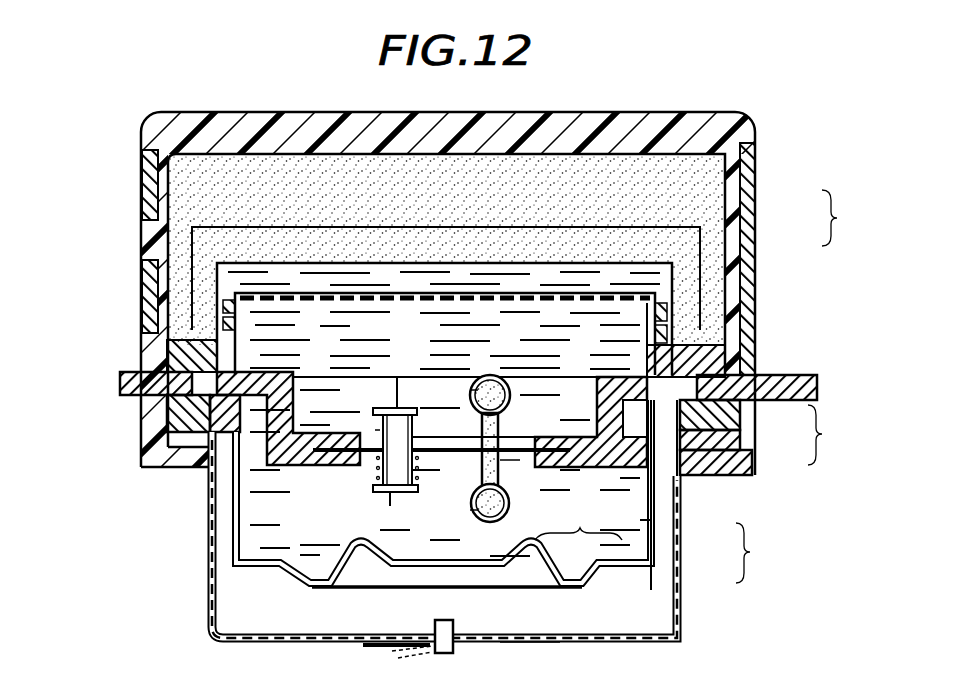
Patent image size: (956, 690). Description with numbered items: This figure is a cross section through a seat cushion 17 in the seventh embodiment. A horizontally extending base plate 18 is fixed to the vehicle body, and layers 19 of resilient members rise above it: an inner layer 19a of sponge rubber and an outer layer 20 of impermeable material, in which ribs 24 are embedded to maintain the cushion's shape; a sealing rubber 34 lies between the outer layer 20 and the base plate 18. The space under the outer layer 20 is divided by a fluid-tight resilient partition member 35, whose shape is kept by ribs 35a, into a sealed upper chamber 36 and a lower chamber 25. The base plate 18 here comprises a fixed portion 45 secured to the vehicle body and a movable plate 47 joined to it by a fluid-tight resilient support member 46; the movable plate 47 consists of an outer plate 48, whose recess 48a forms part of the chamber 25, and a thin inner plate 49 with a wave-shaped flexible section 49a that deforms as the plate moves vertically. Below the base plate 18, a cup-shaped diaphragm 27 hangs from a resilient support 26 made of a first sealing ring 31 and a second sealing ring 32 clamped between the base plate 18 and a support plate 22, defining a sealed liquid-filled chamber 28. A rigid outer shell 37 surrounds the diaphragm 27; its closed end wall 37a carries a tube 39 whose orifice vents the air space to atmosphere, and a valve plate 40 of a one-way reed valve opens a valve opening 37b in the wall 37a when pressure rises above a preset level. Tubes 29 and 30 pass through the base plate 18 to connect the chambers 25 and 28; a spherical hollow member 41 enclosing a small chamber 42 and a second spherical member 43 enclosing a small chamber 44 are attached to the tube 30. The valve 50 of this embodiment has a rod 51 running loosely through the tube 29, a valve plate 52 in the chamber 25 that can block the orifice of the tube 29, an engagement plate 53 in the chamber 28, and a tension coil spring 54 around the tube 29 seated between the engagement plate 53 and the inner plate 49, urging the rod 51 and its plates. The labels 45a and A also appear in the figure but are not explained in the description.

The seat cushion 17 is at (154, 106).
The ribs 24 is at (748, 180).
The sponge rubber layer 19a is at (716, 207).
The resilient layers 19 is at (844, 218).
The outer layer 20 is at (745, 238).
The upper chamber 36 is at (700, 271).
The chamber 25 is at (660, 318).
The ribs 35a is at (243, 313).
The partition member 35 is at (388, 297).
The sealing rubber 34 is at (748, 367).
The resilient support member 46 is at (648, 364).
The outer plate 48 is at (617, 440).
The recess 48a is at (585, 385).
The flexible section 49a is at (547, 470).
The first sealing ring 31 is at (742, 424).
The second sealing ring 32 is at (742, 452).
The support plate 22 is at (742, 462).
The resilient support 26 is at (829, 435).
The outer shell 37 is at (682, 581).
The end wall 37a is at (527, 645).
The valve opening 37b is at (415, 640).
The tube 39 is at (455, 626).
The valve plate 40 is at (420, 653).
The diaphragm 27 is at (657, 526).
The vessel assembly A is at (752, 553).
The base plate 18 is at (575, 584).
The chamber 28 is at (655, 501).
The spherical hollow member 41 is at (511, 393).
The small chamber 42 is at (469, 391).
The tube 30 is at (481, 432).
The movable plate 47 is at (512, 512).
The fixed plate 45 is at (622, 472).
The inner plate 49 is at (545, 463).
The spherical hollow member 43 is at (470, 480).
The small chamber 44 is at (470, 509).
The valve plate 52 is at (395, 408).
The rod 51 is at (380, 477).
The engagement plate 53 is at (392, 494).
The tension coil spring 54 is at (373, 497).
The tube 29 is at (375, 428).
The left seal 45a is at (205, 392).
The valve 50 is at (297, 542).